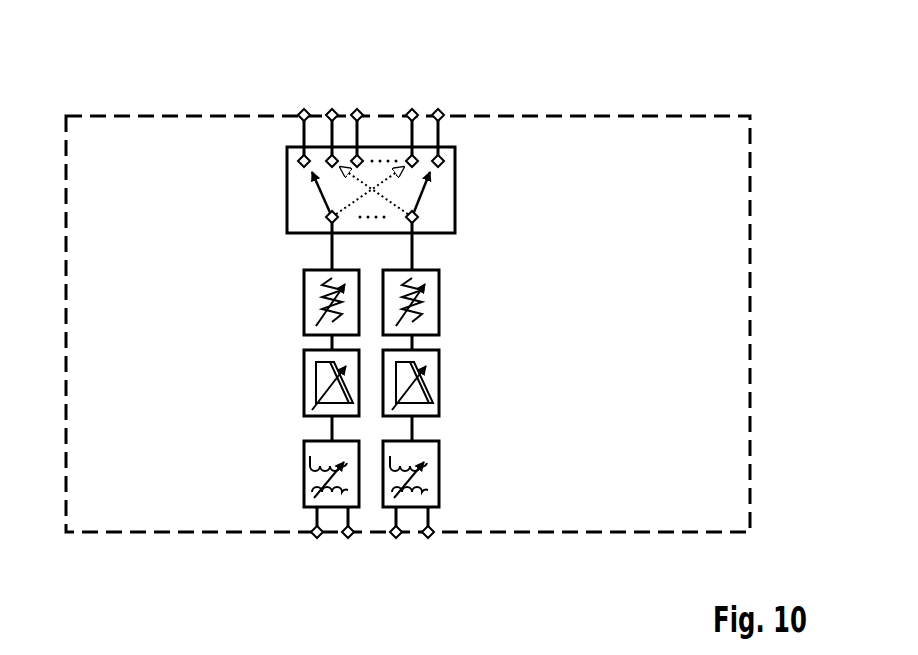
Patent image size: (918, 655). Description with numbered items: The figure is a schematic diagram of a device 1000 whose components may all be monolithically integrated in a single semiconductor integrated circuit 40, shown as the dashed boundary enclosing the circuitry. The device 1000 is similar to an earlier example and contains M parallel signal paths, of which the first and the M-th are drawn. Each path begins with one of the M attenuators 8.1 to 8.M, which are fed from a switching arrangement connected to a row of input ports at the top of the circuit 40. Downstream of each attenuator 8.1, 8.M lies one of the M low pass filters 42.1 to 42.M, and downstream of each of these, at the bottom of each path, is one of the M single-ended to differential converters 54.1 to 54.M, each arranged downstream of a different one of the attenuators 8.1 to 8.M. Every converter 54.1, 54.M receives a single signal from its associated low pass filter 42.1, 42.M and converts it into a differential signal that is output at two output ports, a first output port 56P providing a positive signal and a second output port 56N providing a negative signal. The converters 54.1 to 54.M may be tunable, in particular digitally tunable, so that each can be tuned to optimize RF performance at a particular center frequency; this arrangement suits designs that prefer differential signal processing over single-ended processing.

The device 1000 is at (168, 44).
The single semiconductor integrated circuit 40 is at (751, 308).
The attenuator 8.1 is at (304, 294).
The attenuator 8.M is at (439, 309).
The low pass filter 42.1 is at (304, 388).
The low pass filter 42.M is at (439, 378).
The single-ended to differential converter 54.1 is at (304, 482).
The single-ended to differential converter 54.M is at (439, 485).
The first output port 56P is at (314, 538).
The second output port 56N is at (351, 537).